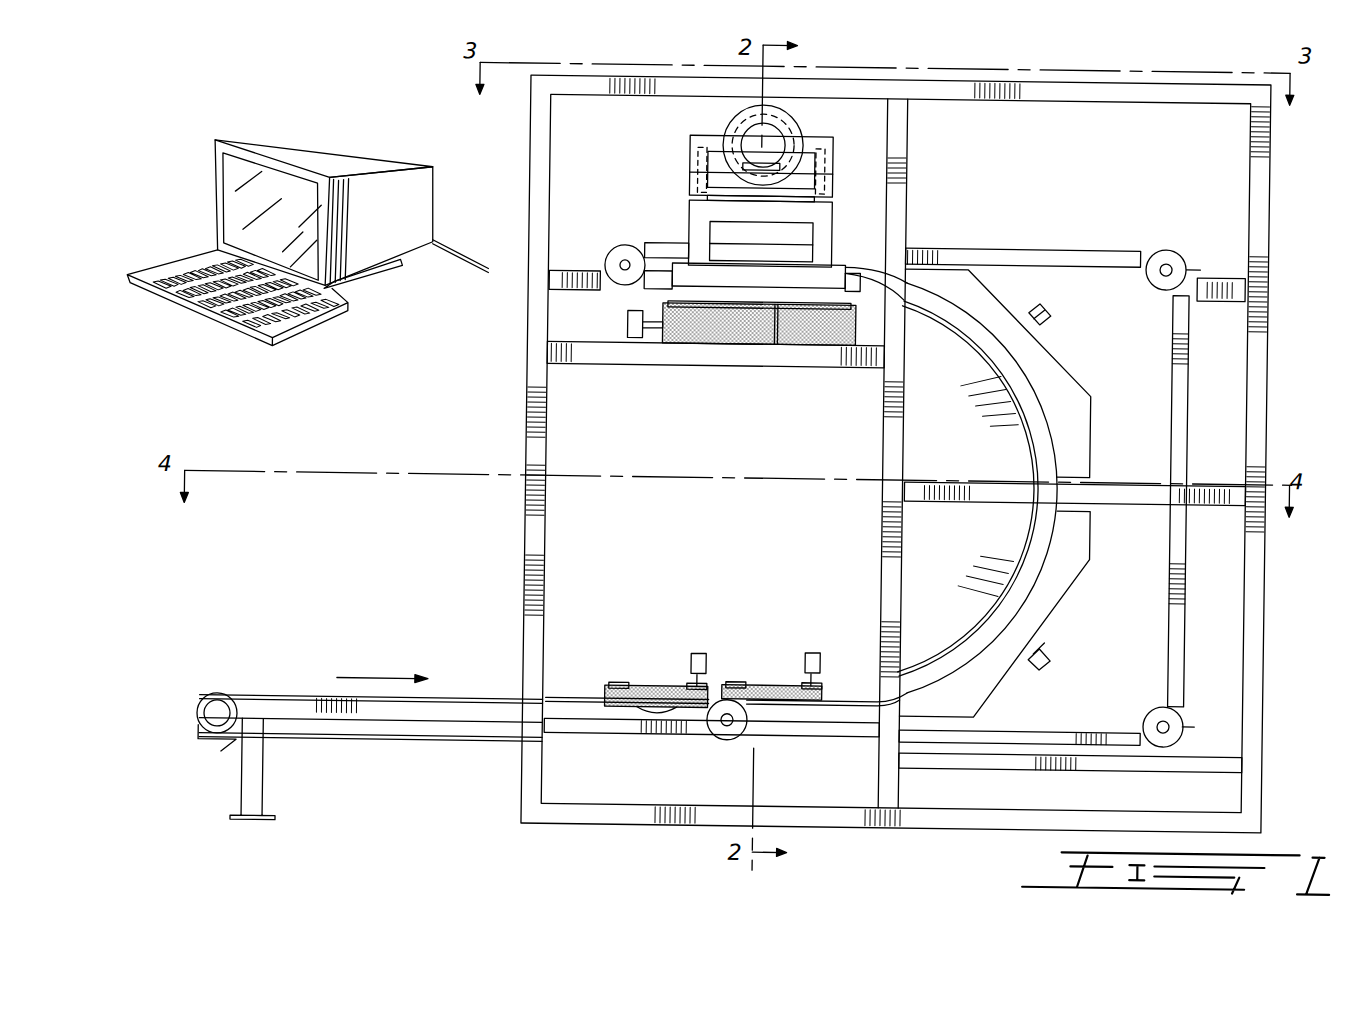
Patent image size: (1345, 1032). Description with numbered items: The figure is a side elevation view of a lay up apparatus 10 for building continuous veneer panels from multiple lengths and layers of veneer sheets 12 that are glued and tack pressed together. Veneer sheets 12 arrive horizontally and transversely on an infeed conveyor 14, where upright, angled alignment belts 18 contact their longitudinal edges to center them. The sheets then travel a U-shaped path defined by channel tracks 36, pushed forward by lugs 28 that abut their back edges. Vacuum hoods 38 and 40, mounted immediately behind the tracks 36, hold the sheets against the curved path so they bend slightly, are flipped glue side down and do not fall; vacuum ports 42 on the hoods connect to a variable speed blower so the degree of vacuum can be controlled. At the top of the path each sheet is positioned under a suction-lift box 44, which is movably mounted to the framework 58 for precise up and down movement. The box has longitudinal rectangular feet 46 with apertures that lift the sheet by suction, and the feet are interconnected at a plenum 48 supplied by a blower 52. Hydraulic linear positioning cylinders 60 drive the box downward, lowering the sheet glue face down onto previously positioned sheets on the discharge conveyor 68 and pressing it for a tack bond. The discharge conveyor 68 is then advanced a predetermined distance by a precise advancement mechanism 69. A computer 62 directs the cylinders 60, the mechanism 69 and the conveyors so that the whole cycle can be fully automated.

The lay up apparatus 10 is at (218, 84).
The veneer sheets 12 is at (788, 284).
The infeed conveyor 14 is at (303, 701).
The alignment belts 18 is at (753, 692).
The lugs 28 is at (987, 247).
The channel tracks 36 is at (1097, 255).
The vacuum hood 38 is at (993, 679).
The vacuum hood 40 is at (1044, 360).
The vacuum ports 42 is at (1045, 316).
The suction-lift box 44 is at (682, 214).
The rectangular feet 46 is at (828, 271).
The plenum 48 is at (797, 213).
The blower 52 is at (786, 111).
The framework 58 is at (1015, 95).
The hydraulic linear positioning cylinders 60 is at (818, 163).
The computer 62 is at (425, 201).
The discharge conveyor 68 is at (704, 338).
The advancement mechanism 69 is at (623, 326).